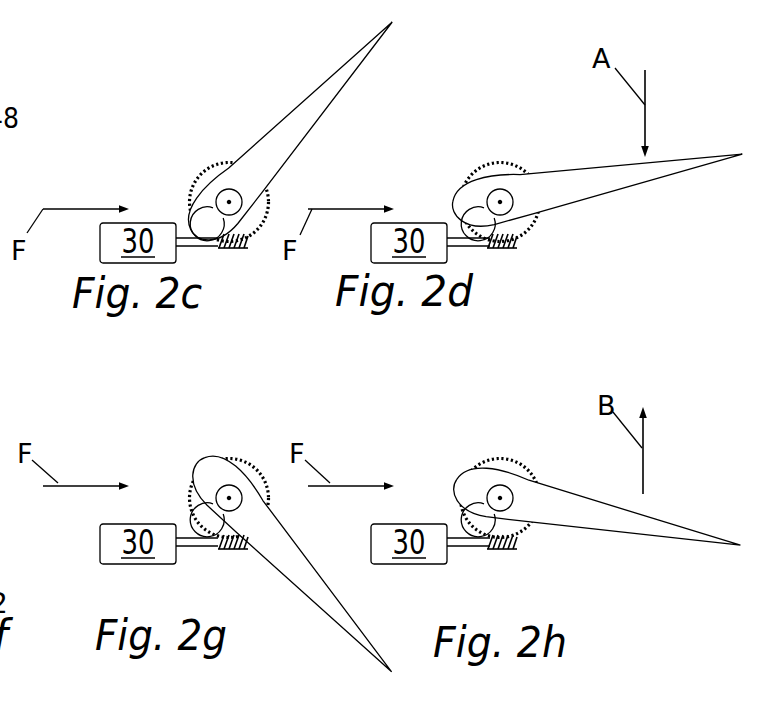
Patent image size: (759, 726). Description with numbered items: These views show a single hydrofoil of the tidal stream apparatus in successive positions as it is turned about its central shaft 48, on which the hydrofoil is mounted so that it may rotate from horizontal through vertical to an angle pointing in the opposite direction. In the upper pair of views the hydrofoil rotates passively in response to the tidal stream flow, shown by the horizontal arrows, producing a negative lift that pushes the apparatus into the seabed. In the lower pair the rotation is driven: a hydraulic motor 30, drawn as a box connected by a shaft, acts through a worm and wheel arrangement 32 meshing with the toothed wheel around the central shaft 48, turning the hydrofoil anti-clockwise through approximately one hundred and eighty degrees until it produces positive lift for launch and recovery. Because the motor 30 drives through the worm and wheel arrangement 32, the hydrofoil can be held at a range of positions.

In FIG. 2C, the hydraulic motor 30 is at (159, 242).
In FIG. 2D, the hydraulic motor 30 is at (430, 242).
In FIG. 2G, the hydraulic motor 30 is at (159, 543).
In FIG. 2H, the hydraulic motor 30 is at (430, 543).
In FIG. 2C, the worm and wheel arrangement 32 is at (233, 248).
In FIG. 2D, the worm and wheel arrangement 32 is at (503, 248).
In FIG. 2G, the worm and wheel arrangement 32 is at (227, 533).
In FIG. 2H, the worm and wheel arrangement 32 is at (513, 547).
In FIG. 2C, the central shaft 48 is at (225, 197).
In FIG. 2D, the central shaft 48 is at (497, 197).
In FIG. 2G, the central shaft 48 is at (223, 487).
In FIG. 2H, the central shaft 48 is at (495, 490).